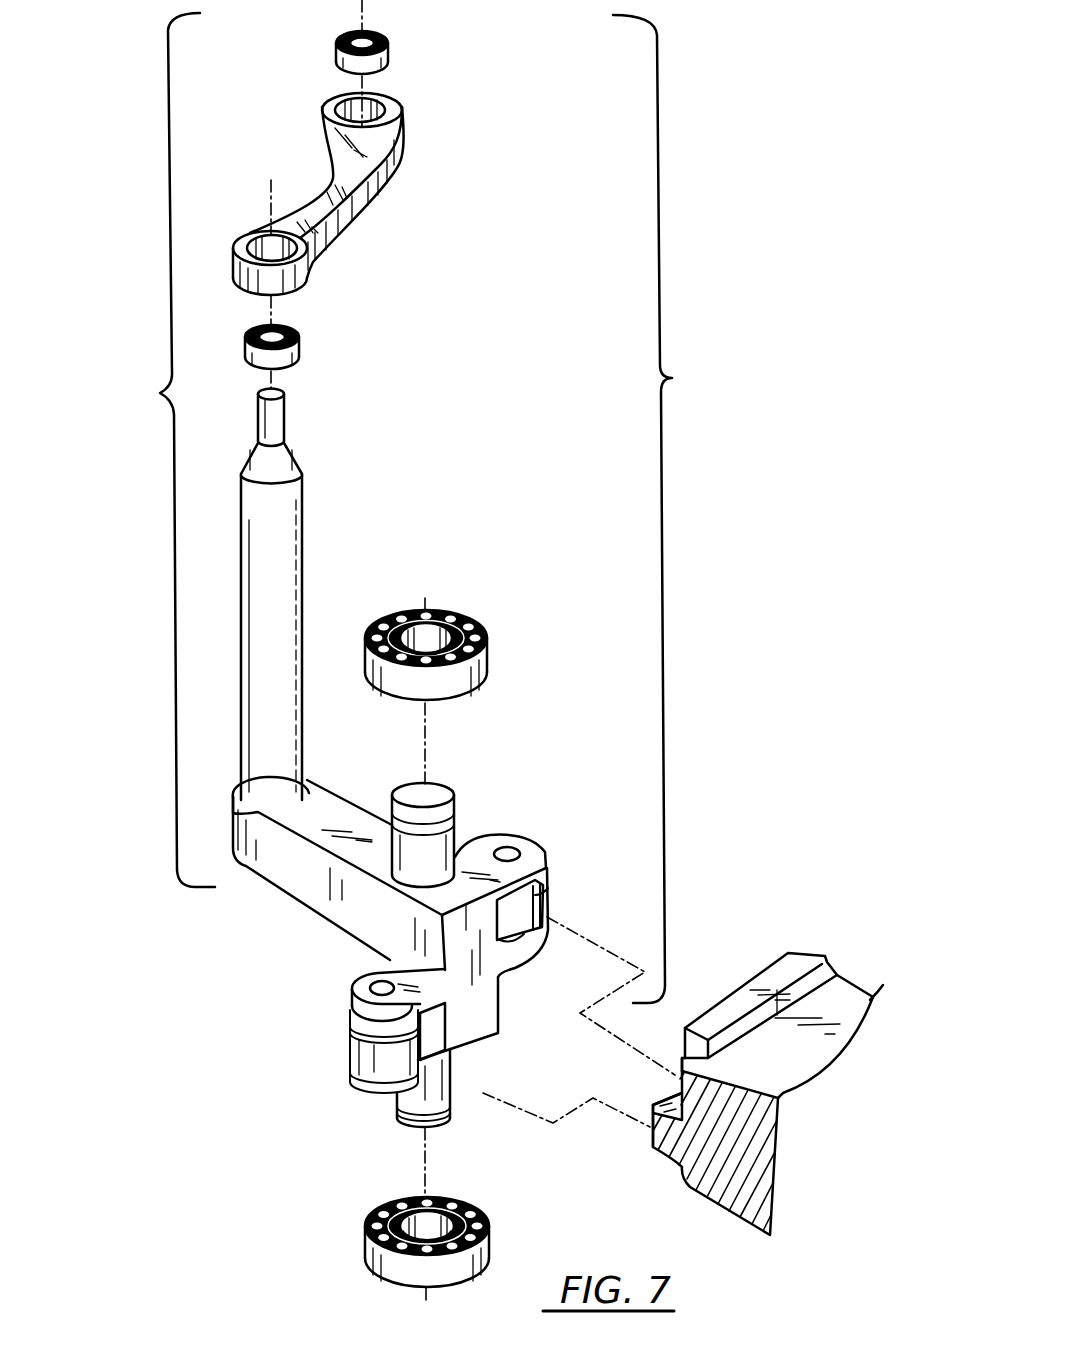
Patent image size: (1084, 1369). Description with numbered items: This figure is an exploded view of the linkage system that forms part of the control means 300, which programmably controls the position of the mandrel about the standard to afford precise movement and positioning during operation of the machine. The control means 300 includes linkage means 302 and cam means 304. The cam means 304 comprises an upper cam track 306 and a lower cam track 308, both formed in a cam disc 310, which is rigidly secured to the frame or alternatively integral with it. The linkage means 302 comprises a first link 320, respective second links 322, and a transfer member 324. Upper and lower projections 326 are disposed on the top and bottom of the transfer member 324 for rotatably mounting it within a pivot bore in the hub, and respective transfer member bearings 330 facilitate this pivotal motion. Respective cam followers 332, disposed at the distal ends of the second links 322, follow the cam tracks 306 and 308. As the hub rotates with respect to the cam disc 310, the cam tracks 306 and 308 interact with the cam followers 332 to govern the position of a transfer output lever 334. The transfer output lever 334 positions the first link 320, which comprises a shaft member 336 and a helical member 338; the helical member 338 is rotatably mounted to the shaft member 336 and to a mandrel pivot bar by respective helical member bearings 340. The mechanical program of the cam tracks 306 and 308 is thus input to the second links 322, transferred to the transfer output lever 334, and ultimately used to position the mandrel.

The control means 300 is at (814, 603).
The linkage means 302 is at (680, 509).
The cam means 304 is at (731, 988).
The upper cam track 306 is at (678, 1073).
The lower cam track 308 is at (652, 1135).
The cam disc 310 is at (820, 1020).
The first link 320 is at (155, 450).
The second links 322 is at (473, 838).
The transfer member 324 is at (320, 932).
The upper and lower projections 326 is at (456, 812).
The transfer member bearings 330 is at (488, 661).
The cam followers 332 is at (350, 1042).
The transfer output lever 334 is at (332, 887).
The shaft member 336 is at (303, 482).
The helical member 338 is at (372, 188).
The helical member bearings 340 is at (390, 55).